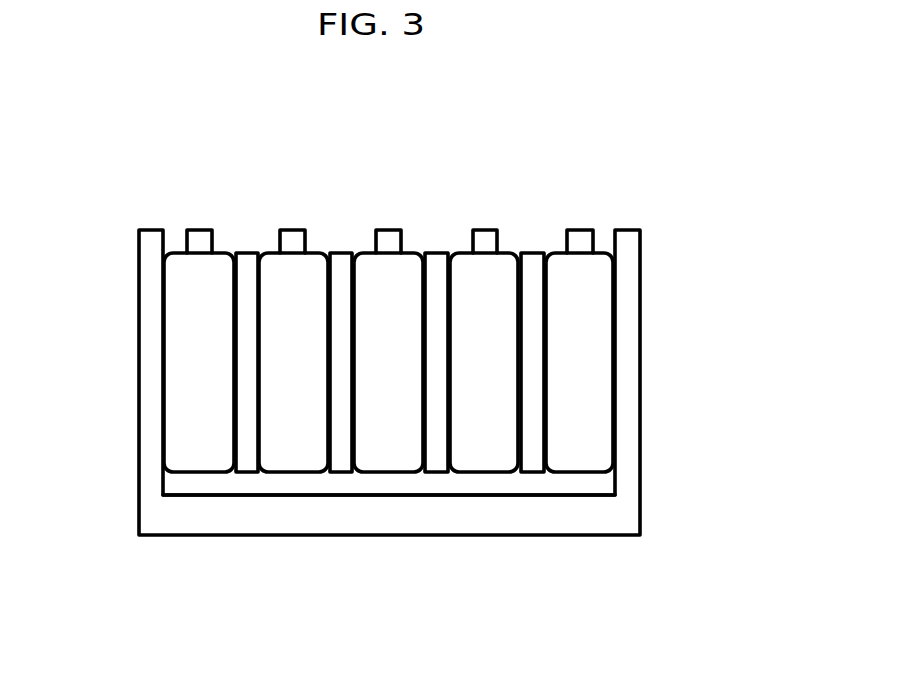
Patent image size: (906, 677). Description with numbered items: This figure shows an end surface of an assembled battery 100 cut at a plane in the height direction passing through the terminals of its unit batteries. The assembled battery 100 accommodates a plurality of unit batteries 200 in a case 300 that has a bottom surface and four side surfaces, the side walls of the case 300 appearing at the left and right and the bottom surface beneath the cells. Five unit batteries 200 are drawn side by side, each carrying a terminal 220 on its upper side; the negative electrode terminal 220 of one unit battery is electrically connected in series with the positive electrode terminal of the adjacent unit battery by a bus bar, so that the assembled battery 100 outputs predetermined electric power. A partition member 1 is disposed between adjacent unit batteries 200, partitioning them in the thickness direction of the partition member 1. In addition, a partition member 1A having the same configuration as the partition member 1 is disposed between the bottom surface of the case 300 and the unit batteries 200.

The assembled battery 100 is at (718, 178).
The unit battery 200 is at (198, 472).
The terminal 220 is at (195, 229).
The partition member 1 is at (243, 465).
The partition member 1A is at (607, 483).
The case 300 is at (139, 390).